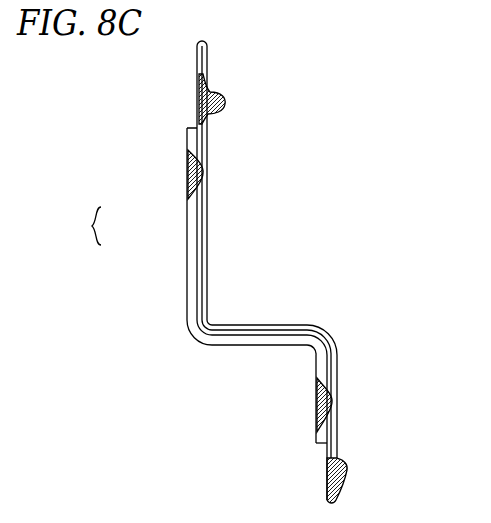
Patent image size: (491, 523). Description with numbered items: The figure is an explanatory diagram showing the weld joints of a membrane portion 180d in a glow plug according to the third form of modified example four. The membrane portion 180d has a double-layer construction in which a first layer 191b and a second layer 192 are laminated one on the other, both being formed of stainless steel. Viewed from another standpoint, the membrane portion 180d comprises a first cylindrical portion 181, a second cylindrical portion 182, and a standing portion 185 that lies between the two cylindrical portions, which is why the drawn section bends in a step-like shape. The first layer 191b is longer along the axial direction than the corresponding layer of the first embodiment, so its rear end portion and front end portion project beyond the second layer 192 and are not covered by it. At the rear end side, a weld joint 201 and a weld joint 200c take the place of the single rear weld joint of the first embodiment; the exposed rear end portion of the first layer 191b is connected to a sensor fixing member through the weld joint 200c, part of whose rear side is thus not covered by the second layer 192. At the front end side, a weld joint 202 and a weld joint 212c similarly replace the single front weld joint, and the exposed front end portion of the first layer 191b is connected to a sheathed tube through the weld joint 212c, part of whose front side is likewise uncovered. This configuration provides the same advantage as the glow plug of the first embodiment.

The membrane portion 180d is at (189, 270).
The first layer 191b is at (196, 215).
The second layer 192 is at (194, 243).
The first cylindrical portion 181 is at (214, 285).
The standing portion 185 is at (263, 309).
The second cylindrical portion 182 is at (285, 432).
The weld joint 200c is at (218, 92).
The weld joint 201 is at (185, 171).
The weld joint 202 is at (318, 397).
The weld joint 212c is at (367, 443).